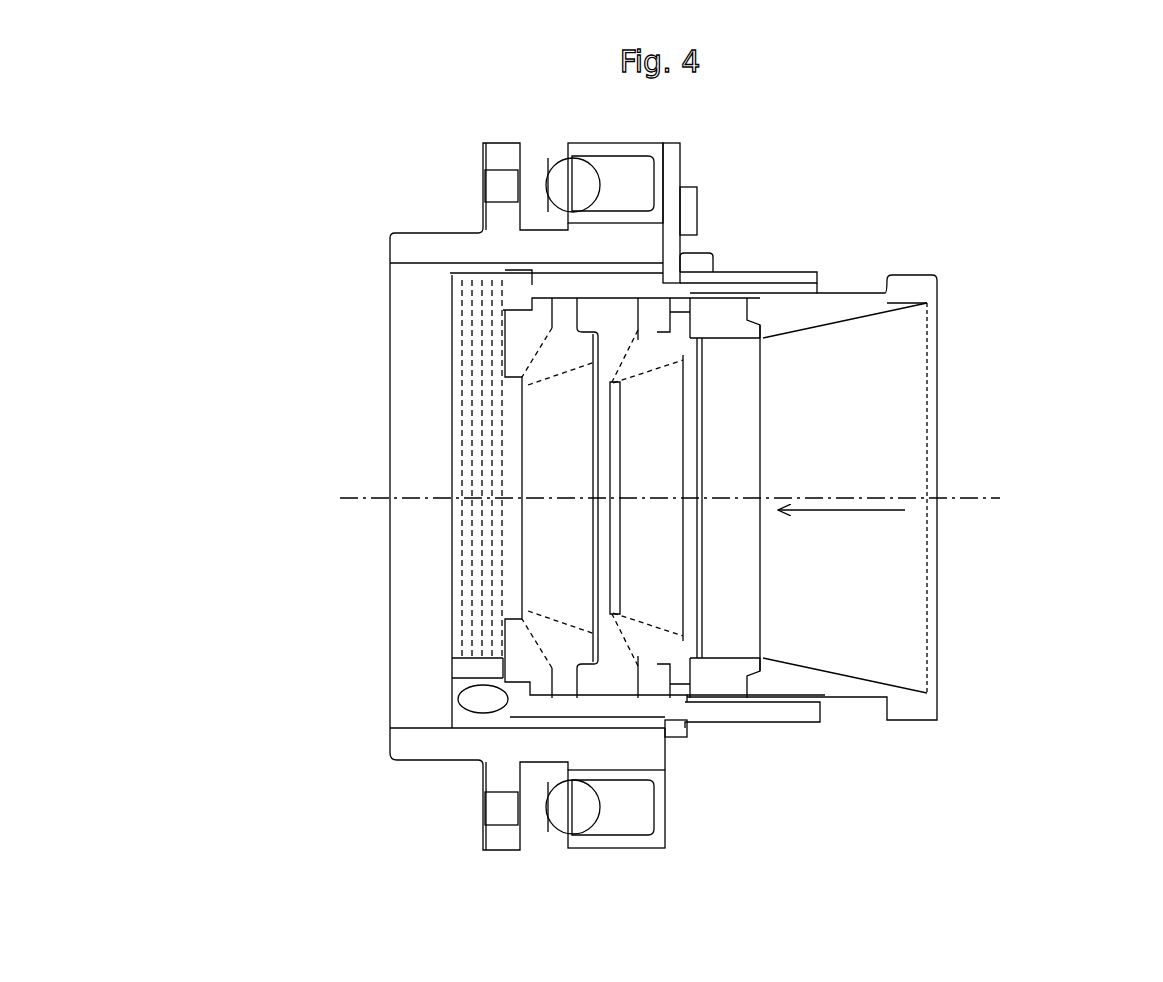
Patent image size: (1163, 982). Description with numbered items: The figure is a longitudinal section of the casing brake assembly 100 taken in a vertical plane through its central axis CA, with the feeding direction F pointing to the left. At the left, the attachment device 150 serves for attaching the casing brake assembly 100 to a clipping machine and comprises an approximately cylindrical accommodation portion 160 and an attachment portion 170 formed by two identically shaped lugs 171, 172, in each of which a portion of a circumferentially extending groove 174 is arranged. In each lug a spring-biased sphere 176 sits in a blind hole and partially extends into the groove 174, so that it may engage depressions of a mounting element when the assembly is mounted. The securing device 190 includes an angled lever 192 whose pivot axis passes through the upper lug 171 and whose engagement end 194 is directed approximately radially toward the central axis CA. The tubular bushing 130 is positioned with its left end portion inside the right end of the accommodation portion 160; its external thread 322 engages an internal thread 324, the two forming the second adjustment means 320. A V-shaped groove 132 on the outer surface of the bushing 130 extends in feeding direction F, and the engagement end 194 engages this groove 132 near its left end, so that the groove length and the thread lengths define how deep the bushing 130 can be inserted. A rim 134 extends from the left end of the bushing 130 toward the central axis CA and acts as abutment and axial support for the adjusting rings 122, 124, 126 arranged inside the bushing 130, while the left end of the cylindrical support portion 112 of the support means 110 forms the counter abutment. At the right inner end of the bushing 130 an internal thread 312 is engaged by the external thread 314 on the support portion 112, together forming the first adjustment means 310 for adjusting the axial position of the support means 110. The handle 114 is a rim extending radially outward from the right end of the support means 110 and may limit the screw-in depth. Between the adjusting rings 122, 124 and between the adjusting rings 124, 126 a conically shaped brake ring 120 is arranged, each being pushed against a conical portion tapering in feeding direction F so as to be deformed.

The casing brake assembly 100 is at (1083, 102).
The support means 110 is at (1063, 350).
The cylindrical support portion 112 is at (862, 298).
The handle 114 is at (913, 285).
The brake ring 120 is at (647, 628).
The adjusting ring 122 is at (520, 327).
The adjusting ring 124 is at (603, 318).
The adjusting ring 126 is at (712, 327).
The tubular bushing 130 is at (765, 712).
The V-shaped groove 132 is at (735, 296).
The rim 134 is at (518, 693).
The attachment device 150 is at (312, 210).
The accommodation portion 160 is at (445, 252).
The attachment portion 170 is at (445, 90).
The lug 171 is at (500, 155).
The lug 172 is at (498, 842).
The groove 174 is at (541, 155).
The sphere 176 is at (573, 185).
The securing device 190 is at (767, 165).
The angled lever 192 is at (668, 177).
The engagement end 194 is at (668, 275).
The first adjustment means 310 is at (1010, 232).
The internal thread 312 is at (823, 293).
The external thread 314 is at (777, 280).
The second adjustment means 320 is at (283, 285).
The external thread 322 is at (525, 272).
The internal thread 324 is at (463, 295).
The central axis CA is at (967, 500).
The feeding direction F is at (841, 527).